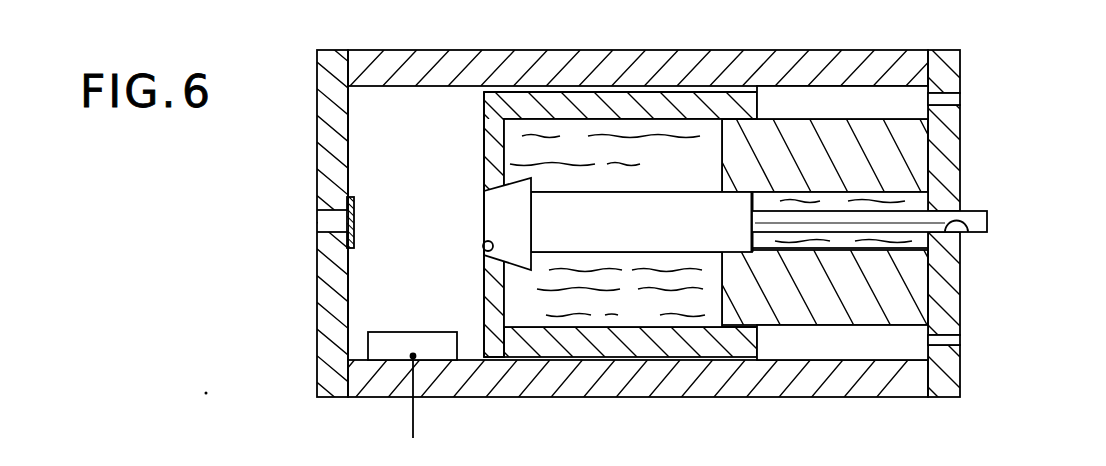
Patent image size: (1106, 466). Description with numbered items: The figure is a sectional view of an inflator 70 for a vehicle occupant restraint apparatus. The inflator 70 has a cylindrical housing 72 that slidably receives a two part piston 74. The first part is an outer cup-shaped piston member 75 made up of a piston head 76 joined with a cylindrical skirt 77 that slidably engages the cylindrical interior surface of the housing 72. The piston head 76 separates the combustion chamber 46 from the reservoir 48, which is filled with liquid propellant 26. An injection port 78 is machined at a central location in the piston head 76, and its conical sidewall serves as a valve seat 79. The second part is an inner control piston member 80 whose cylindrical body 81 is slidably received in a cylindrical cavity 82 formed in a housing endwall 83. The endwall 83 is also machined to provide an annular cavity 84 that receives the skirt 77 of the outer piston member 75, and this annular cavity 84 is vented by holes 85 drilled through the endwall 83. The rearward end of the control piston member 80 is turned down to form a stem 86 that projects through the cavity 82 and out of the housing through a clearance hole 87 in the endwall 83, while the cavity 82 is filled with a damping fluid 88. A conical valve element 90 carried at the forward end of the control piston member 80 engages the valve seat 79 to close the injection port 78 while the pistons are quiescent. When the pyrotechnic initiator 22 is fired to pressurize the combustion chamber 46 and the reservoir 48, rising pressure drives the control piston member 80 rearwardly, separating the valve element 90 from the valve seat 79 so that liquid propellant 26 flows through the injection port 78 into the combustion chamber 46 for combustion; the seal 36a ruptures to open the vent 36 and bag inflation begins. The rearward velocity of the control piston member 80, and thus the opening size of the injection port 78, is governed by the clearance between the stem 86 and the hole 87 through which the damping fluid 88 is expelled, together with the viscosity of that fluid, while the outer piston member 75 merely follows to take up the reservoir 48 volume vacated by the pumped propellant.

The inflator 70 is at (1005, 130).
The cylindrical housing 72 is at (850, 50).
The housing endwall 83 is at (955, 178).
The annular cavity 84 is at (858, 116).
The holes 85 is at (948, 100).
The piston head 76 is at (490, 130).
The reservoir 48 is at (642, 297).
The cylindrical skirt 77 is at (552, 350).
The control piston member 80 is at (640, 183).
The liquid propellant 26 is at (545, 297).
The cylindrical cavity 82 is at (872, 247).
The damping fluid 88 is at (850, 242).
The cylindrical body 81 is at (648, 231).
The stem 86 is at (988, 222).
The clearance hole 87 is at (963, 233).
The conical valve element 90 is at (523, 222).
The injection port 78 is at (483, 210).
The valve seat 79 is at (484, 251).
The combustion chamber 46 is at (423, 297).
The outer cup-shaped piston member 75 is at (462, 155).
The two part piston 74 is at (450, 232).
The pyrotechnic initiator 22 is at (415, 342).
The vent 36 is at (331, 226).
The seal 36a is at (345, 198).